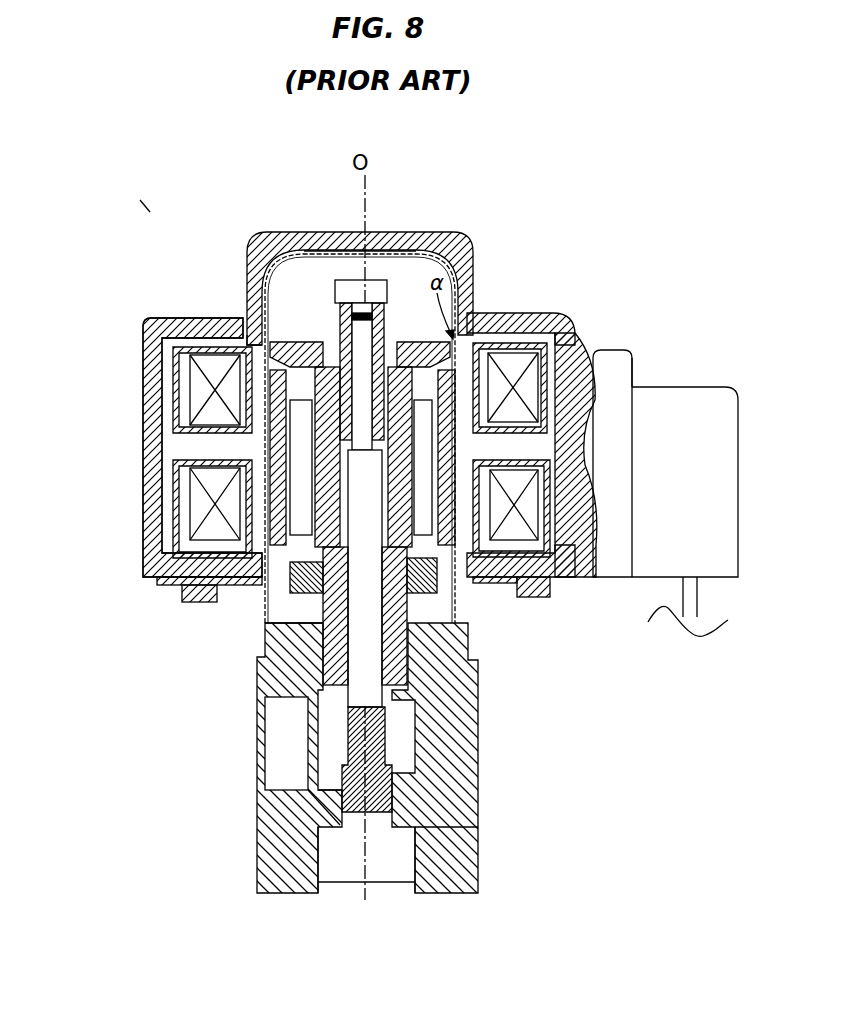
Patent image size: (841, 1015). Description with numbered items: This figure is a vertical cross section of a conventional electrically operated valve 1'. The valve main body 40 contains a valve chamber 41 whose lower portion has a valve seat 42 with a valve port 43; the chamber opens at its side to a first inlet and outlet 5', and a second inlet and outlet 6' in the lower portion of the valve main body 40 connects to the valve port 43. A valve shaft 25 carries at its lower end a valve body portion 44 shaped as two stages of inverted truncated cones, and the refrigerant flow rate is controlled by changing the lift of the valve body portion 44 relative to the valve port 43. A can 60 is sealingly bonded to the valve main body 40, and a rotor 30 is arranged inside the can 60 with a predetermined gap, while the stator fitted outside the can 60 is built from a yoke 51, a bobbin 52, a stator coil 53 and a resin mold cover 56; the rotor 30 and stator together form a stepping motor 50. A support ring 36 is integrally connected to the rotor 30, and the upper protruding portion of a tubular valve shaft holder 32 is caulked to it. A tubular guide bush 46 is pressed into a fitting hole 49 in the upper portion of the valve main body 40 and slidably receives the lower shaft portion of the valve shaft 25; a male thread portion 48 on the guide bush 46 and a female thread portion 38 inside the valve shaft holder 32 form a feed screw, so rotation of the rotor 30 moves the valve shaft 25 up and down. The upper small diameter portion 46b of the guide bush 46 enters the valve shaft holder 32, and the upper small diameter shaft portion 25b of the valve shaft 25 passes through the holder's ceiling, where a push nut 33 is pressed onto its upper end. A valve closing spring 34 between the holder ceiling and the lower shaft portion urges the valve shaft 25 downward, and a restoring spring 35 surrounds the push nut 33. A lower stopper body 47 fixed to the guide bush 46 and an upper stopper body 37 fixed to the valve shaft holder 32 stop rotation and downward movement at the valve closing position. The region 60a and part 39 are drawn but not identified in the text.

The electrically operated valve 1' is at (125, 168).
The upper small diameter shaft portion 25b is at (340, 292).
The cap inner top surface 60a is at (357, 254).
The restoring spring 35 is at (383, 298).
The push nut 33 is at (452, 268).
The can 60 is at (475, 248).
The rotor 30 is at (498, 310).
The support ring 36 is at (247, 305).
The stator plate 39 is at (330, 352).
The resin mold cover 56 is at (140, 330).
The yoke 51 is at (193, 337).
The stator coil 53 is at (140, 347).
The valve closing spring 34 is at (300, 370).
The upper small diameter portion 46b is at (300, 400).
The bobbin 52 is at (305, 466).
The female thread portion 38 is at (300, 481).
The male thread portion 48 is at (303, 503).
The stepping motor 50 is at (585, 352).
The valve shaft holder 32 is at (582, 413).
The valve shaft 25 is at (594, 477).
The upper stopper body 37 is at (456, 574).
The lower stopper body 47 is at (445, 585).
The fitting hole 49 is at (265, 633).
The guide bush 46 is at (300, 664).
The valve chamber 41 is at (328, 735).
The valve body portion 44 is at (398, 783).
The first inlet and outlet 5' is at (278, 780).
The valve port 43 is at (340, 810).
The valve seat 42 is at (457, 807).
The second inlet and outlet 6' is at (363, 907).
The valve main body 40 is at (452, 893).